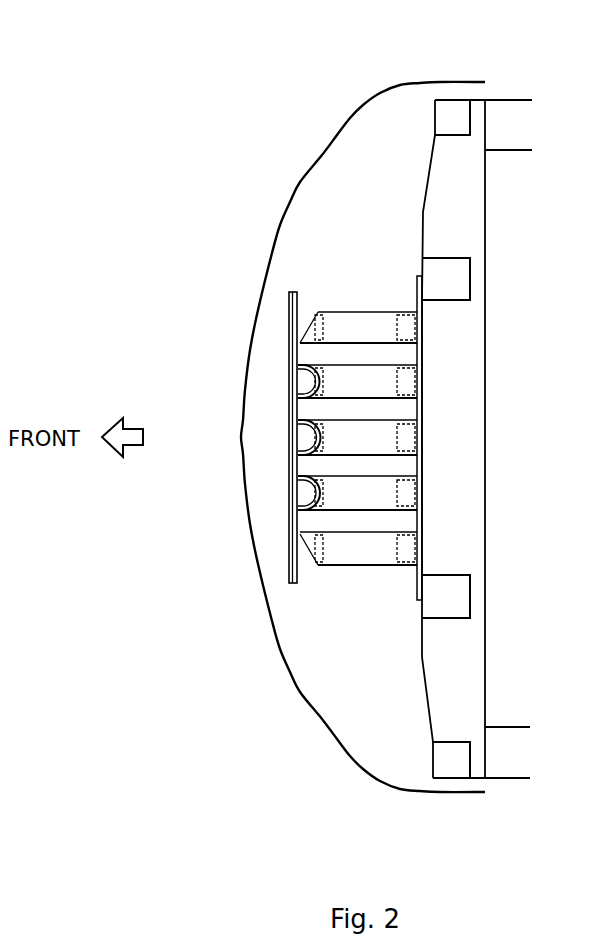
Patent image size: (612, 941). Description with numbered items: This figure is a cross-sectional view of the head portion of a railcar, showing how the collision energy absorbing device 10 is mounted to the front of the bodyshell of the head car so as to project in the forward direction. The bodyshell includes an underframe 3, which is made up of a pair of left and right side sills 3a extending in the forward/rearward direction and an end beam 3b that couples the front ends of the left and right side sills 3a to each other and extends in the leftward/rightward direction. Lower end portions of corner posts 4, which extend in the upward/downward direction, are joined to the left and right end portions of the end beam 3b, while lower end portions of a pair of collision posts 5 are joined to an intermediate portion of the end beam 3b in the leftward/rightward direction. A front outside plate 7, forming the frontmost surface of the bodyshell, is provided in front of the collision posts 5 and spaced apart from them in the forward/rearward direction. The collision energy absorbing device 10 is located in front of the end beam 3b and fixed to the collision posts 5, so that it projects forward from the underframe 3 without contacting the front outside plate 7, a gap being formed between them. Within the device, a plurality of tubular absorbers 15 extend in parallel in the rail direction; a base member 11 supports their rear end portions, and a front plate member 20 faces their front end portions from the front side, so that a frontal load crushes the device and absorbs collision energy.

The underframe 3 is at (487, 451).
The side sills 3a is at (508, 98).
The end beam 3b is at (487, 390).
The corner posts 4 is at (450, 108).
The collision posts 5 is at (458, 278).
The front outside plate 7 is at (312, 158).
The collision energy absorbing device 10 is at (280, 397).
The base member 11 is at (415, 293).
The tubular absorbers 15 is at (348, 311).
The front plate member 20 is at (288, 500).